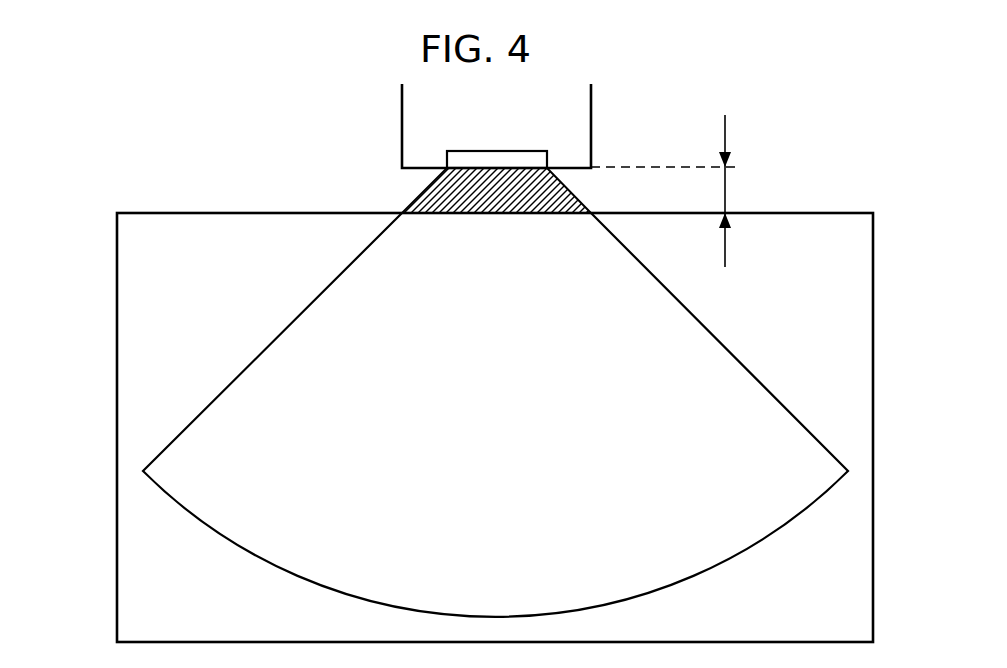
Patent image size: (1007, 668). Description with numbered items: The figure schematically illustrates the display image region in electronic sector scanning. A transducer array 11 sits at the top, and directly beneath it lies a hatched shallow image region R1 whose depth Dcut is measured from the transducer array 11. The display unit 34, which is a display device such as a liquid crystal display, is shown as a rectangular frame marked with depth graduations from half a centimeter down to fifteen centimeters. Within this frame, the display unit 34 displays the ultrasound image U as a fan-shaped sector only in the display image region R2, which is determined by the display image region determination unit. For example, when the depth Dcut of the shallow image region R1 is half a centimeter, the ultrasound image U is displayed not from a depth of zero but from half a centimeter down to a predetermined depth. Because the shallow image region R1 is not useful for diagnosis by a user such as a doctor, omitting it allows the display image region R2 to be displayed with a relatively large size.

The transducer array 11 is at (447, 132).
The shallow image region R1 is at (445, 189).
The display image region R2 is at (362, 293).
The ultrasound image U is at (441, 415).
The display unit 34 is at (172, 569).
The depth of the shallow image region Dcut is at (698, 191).